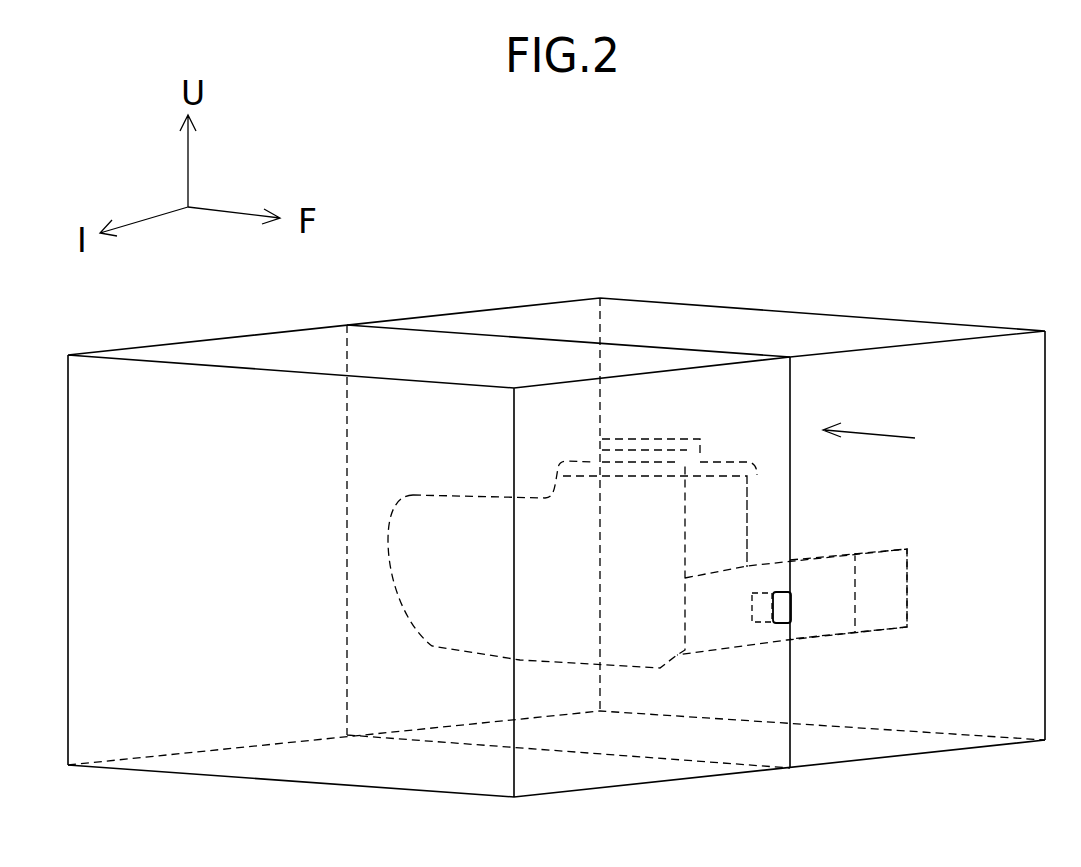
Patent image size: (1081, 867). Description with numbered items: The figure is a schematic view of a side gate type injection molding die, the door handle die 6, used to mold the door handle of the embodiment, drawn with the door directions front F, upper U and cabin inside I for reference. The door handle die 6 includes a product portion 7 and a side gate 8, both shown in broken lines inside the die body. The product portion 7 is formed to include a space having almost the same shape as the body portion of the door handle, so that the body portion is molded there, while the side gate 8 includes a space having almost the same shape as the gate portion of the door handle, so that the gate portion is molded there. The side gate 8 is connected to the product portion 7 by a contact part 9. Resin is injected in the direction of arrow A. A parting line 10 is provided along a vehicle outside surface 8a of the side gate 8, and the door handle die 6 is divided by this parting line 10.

The door handle die 6 is at (636, 258).
The product portion 7 is at (407, 640).
The side gate 8 is at (786, 614).
The vehicle outside surface 8a is at (784, 600).
The contact part 9 is at (750, 622).
The parting line 10 is at (791, 390).